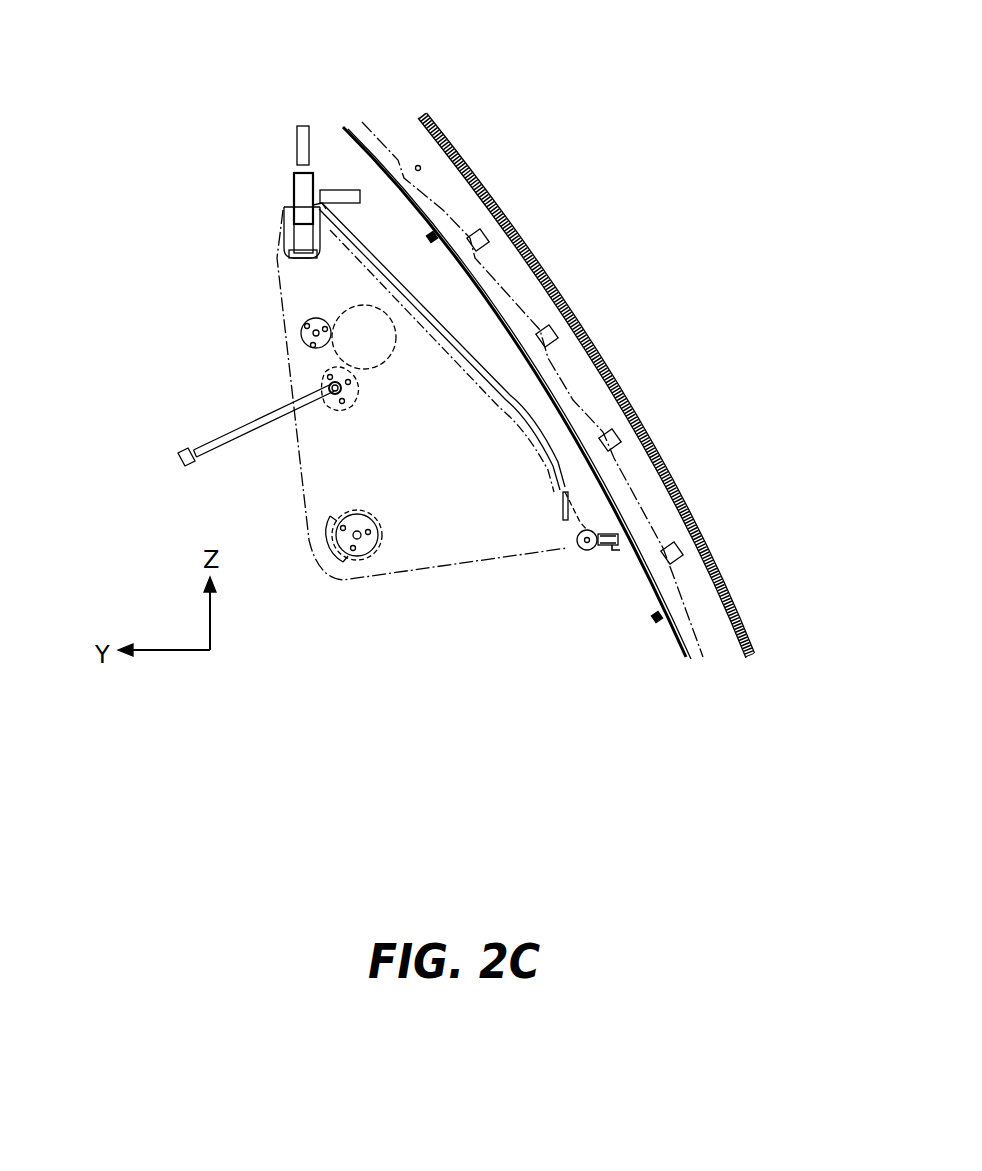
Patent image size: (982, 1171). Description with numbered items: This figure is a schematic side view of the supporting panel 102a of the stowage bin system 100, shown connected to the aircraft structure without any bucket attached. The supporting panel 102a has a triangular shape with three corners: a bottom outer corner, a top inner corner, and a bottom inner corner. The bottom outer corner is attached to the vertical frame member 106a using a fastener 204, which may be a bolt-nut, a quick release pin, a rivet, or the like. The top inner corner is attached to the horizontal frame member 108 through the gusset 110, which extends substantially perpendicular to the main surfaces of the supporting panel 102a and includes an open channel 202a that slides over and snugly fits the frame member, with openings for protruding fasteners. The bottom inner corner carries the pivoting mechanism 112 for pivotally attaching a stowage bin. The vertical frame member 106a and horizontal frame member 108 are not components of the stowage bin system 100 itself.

The stowage bin system 100 is at (677, 206).
The supporting panel 102a is at (422, 530).
The vertical frame member 106a is at (653, 513).
The horizontal frame member 108 is at (303, 200).
The gusset 110 is at (497, 373).
The pivoting mechanism 112 is at (358, 542).
The channel 202a is at (288, 233).
The fastener 204 is at (608, 550).